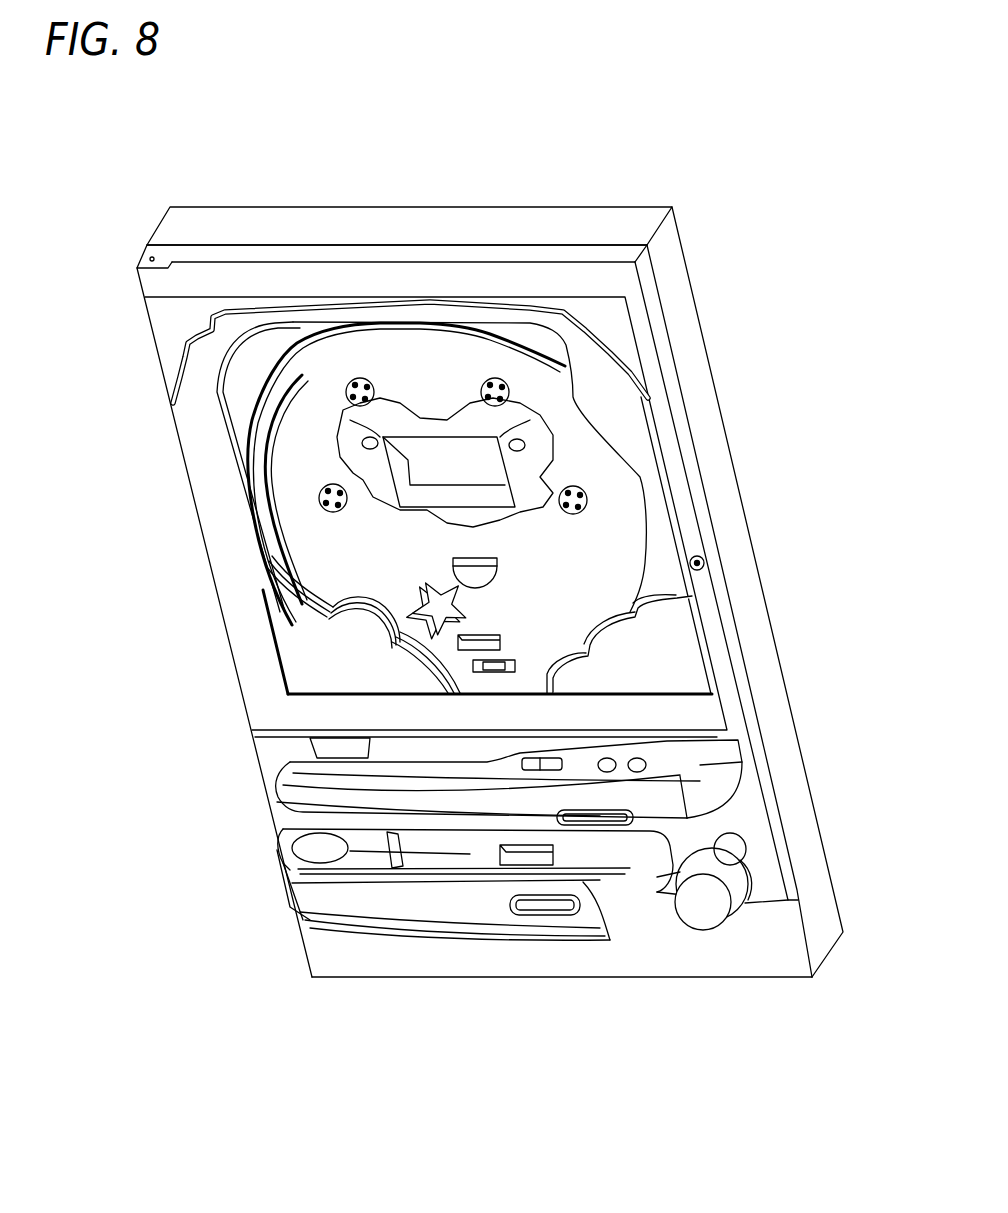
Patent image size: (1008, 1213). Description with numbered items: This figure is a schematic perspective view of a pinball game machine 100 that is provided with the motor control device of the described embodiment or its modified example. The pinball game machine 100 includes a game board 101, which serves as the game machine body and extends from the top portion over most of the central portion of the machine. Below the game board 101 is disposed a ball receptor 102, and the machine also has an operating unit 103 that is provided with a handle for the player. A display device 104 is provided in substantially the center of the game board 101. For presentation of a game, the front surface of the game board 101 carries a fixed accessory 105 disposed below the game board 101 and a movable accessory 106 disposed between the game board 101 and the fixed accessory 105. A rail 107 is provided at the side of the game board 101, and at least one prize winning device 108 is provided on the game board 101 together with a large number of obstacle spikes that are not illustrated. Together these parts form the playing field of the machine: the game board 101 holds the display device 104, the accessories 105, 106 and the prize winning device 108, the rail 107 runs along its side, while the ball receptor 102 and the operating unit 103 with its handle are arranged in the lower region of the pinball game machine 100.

The pinball game machine 100 is at (772, 1005).
The game board 101 is at (612, 468).
The ball receptor 102 is at (383, 848).
The operating unit 103 is at (733, 872).
The display device 104 is at (430, 463).
The fixed accessory 105 is at (313, 652).
The movable accessory 106 is at (425, 602).
The rail 107 is at (273, 402).
The prize winning device 108 is at (497, 552).